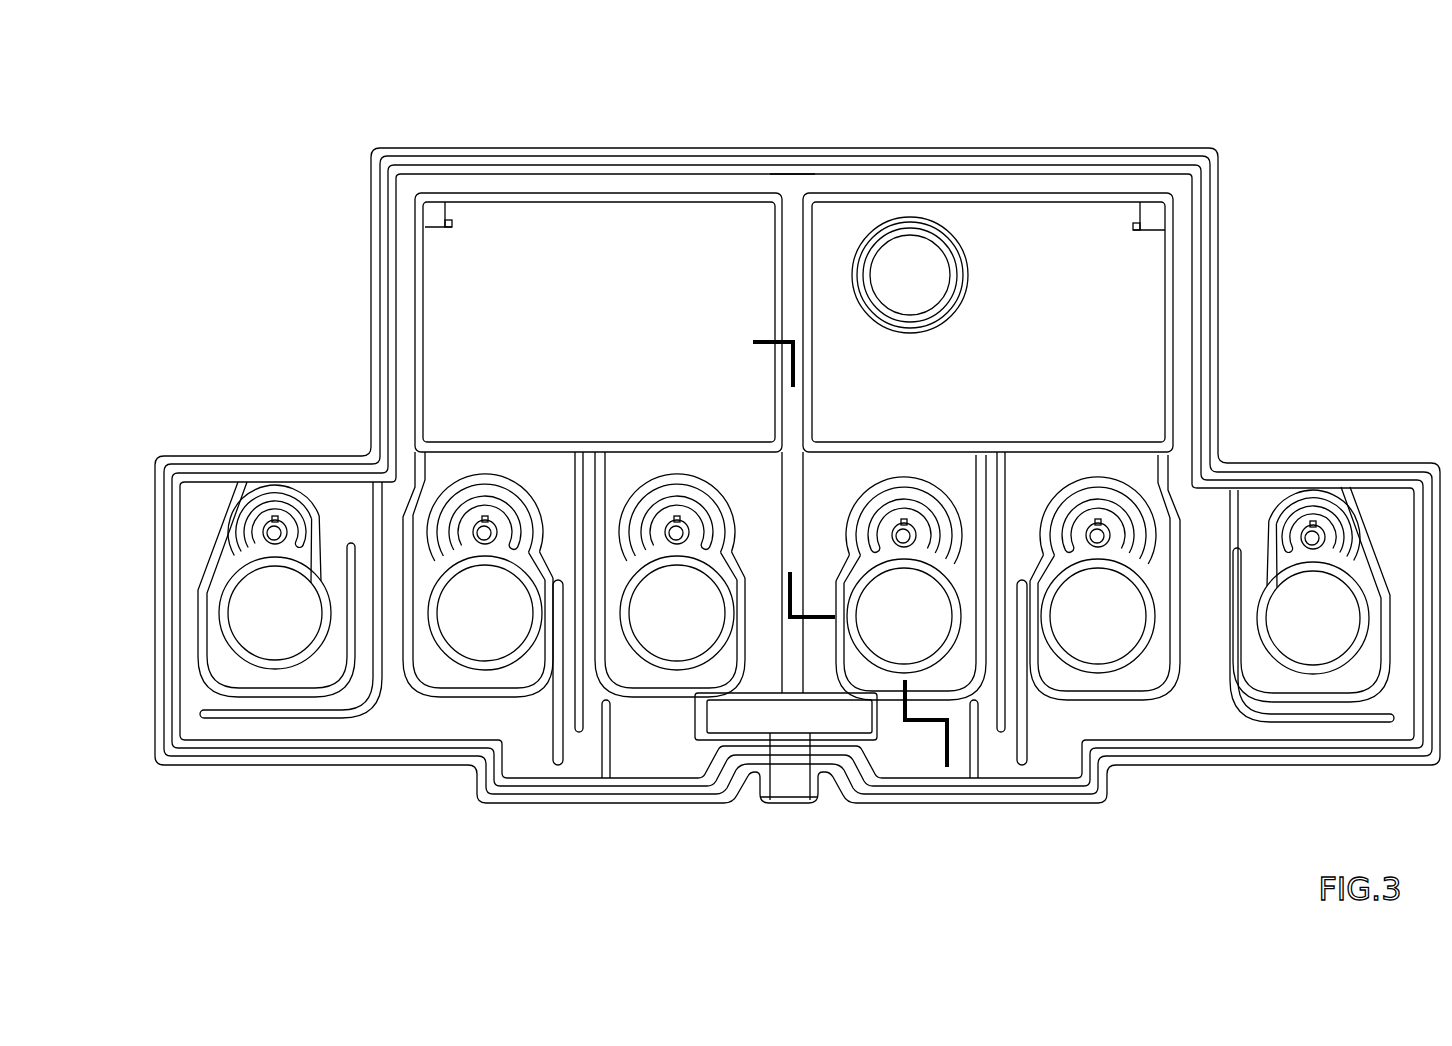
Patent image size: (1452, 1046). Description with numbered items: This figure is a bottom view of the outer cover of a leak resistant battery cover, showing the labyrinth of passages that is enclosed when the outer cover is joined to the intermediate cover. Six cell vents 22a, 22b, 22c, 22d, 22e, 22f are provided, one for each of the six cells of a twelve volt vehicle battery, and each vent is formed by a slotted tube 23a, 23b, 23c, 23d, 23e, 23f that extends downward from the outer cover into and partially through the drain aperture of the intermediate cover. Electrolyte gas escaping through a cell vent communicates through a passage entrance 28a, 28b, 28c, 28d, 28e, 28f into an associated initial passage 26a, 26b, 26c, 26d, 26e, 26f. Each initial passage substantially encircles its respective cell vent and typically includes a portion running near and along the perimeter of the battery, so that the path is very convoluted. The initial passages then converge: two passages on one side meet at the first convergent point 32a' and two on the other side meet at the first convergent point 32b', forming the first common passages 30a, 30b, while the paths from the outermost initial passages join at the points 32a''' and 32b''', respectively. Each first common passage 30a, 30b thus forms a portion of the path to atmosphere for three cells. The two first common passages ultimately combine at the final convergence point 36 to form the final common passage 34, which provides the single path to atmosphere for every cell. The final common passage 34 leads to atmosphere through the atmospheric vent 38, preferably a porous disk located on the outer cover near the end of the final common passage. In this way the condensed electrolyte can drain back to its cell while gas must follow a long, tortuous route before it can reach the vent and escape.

The cell vent 22a is at (1328, 532).
The cell vent 22b is at (1104, 522).
The cell vent 22c is at (916, 527).
The cell vent 22d is at (676, 520).
The cell vent 22e is at (480, 521).
The cell vent 22f is at (264, 526).
The slotted tube 23a is at (1316, 521).
The slotted tube 23b is at (1094, 519).
The slotted tube 23c is at (901, 519).
The slotted tube 23d is at (673, 516).
The slotted tube 23e is at (490, 516).
The slotted tube 23f is at (272, 516).
The initial passage 26a is at (1288, 505).
The initial passage 26b is at (1073, 502).
The initial passage 26c is at (868, 512).
The initial passage 26d is at (703, 510).
The initial passage 26e is at (505, 505).
The initial passage 26f is at (277, 500).
The passage entrance 28a is at (1268, 556).
The passage entrance 28b is at (1060, 563).
The passage entrance 28c is at (866, 557).
The passage entrance 28d is at (745, 552).
The passage entrance 28e is at (556, 540).
The passage entrance 28f is at (321, 544).
The first common passage 30a is at (995, 185).
The first common passage 30b is at (476, 184).
The first convergent point 32a' is at (1047, 740).
The convergent point 32a''' is at (1305, 668).
The first convergent point 32b' is at (593, 726).
The convergent point 32b''' is at (308, 654).
The final common passage 34 is at (793, 256).
The final convergence point 36 is at (800, 183).
The atmospheric vent 38 is at (805, 729).